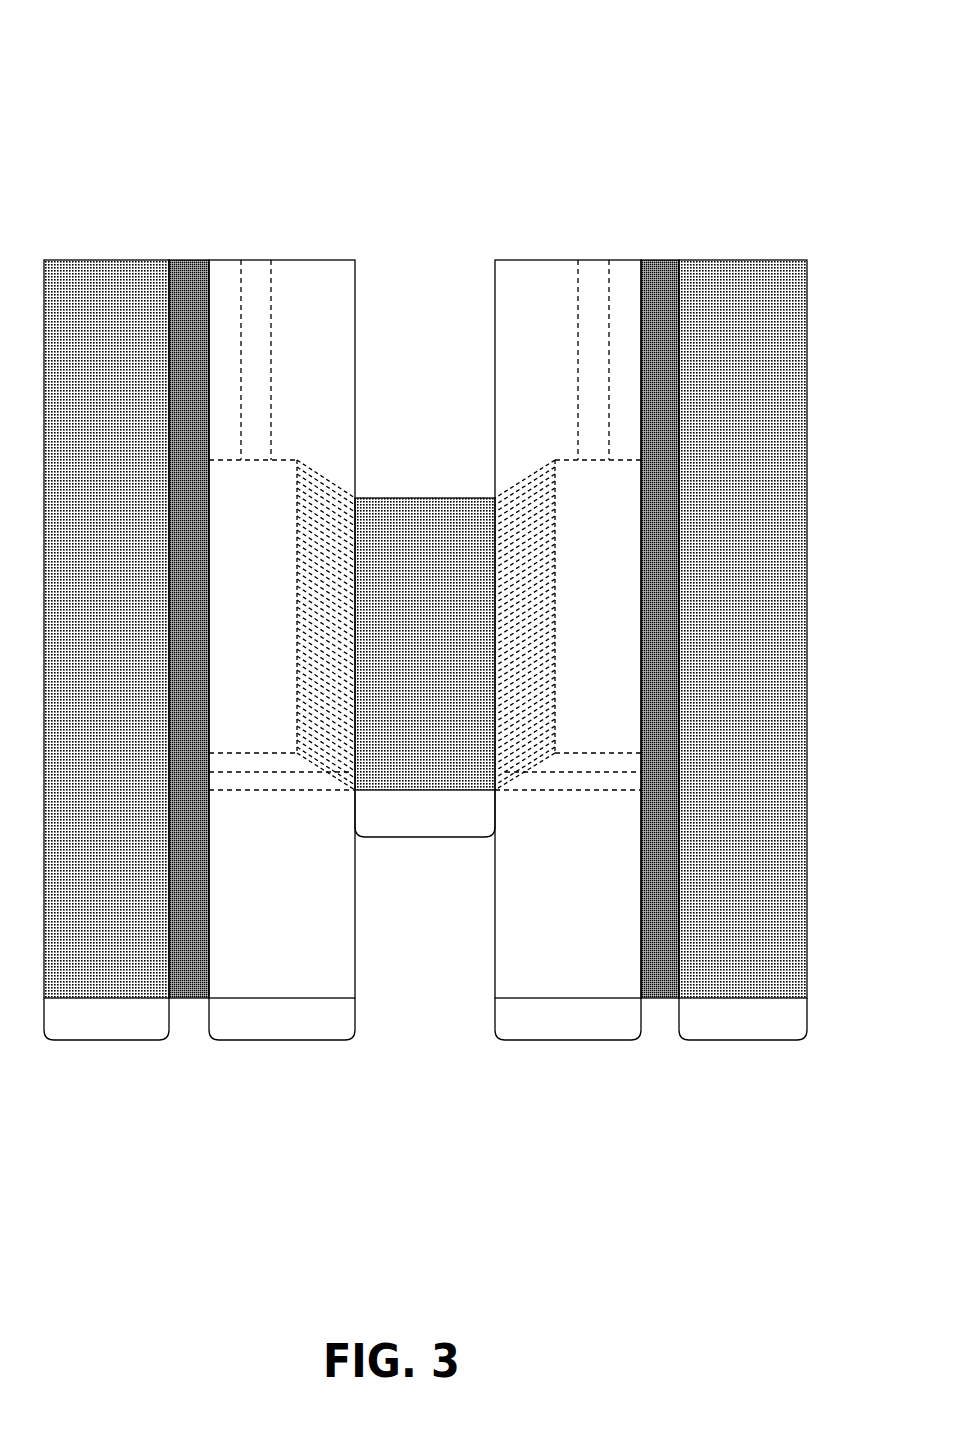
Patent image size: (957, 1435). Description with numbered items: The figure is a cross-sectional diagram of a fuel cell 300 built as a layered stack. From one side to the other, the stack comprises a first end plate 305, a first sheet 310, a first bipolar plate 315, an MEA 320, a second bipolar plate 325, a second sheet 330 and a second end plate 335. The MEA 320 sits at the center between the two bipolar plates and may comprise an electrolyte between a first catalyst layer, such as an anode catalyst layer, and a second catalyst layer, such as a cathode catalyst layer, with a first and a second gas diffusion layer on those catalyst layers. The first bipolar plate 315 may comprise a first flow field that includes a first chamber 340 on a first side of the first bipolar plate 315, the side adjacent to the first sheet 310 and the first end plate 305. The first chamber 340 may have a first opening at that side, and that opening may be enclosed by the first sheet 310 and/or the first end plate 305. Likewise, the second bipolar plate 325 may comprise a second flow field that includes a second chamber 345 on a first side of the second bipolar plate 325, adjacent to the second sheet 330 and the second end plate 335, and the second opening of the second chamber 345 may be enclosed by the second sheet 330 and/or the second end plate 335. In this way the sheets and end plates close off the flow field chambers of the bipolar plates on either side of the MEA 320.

The fuel cell 300 is at (118, 42).
The first end plate 305 is at (105, 1040).
The first sheet 310 is at (189, 998).
The first bipolar plate 315 is at (280, 1040).
The MEA 320 is at (423, 838).
The second bipolar plate 325 is at (566, 1040).
The second sheet 330 is at (662, 998).
The second end plate 335 is at (745, 1040).
The first chamber 340 is at (283, 460).
The second chamber 345 is at (569, 460).